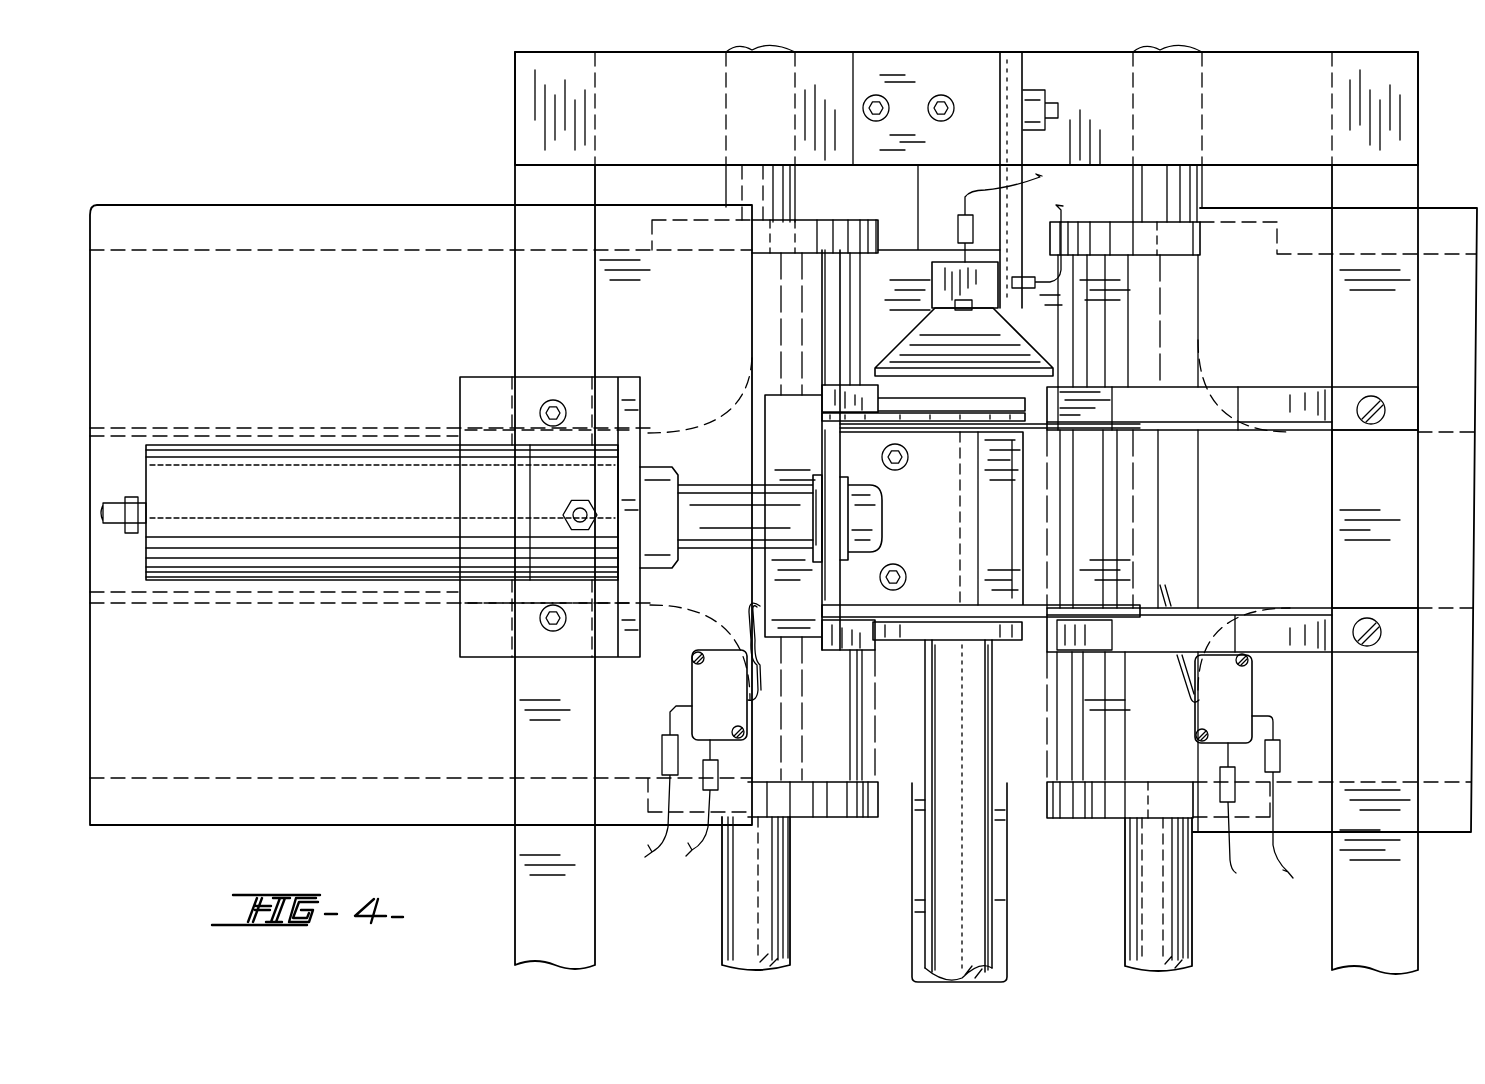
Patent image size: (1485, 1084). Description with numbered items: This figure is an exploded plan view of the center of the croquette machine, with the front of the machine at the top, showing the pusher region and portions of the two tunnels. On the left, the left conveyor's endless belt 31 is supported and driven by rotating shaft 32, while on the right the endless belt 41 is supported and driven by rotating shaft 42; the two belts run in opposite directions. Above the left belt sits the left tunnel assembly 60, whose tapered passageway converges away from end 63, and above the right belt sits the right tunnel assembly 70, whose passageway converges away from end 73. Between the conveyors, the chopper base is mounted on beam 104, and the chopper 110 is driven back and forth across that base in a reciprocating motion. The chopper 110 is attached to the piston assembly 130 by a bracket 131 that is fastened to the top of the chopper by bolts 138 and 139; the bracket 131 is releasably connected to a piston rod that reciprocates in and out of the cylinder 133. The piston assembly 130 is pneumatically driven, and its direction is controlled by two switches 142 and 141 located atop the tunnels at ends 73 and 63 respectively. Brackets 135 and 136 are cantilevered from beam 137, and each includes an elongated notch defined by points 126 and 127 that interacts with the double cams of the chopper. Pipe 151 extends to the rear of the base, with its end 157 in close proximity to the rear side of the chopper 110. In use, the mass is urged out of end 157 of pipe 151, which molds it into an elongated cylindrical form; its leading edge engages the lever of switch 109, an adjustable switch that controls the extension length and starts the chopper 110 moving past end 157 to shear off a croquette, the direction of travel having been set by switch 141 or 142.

The endless belt 31 is at (1418, 830).
The rotating shaft 32 is at (1195, 915).
The endless belt 41 is at (425, 825).
The rotating shaft 42 is at (783, 905).
The left tunnel assembly 60 is at (1452, 198).
The end of passageway 63 is at (1195, 505).
The right tunnel assembly 70 is at (475, 190).
The end of passageway 73 is at (752, 436).
The beam 104 is at (918, 206).
The switch 109 is at (932, 295).
The chopper 110 is at (1023, 528).
The notch point 126 is at (878, 400).
The notch point 127 is at (1055, 400).
The piston assembly 130 is at (444, 408).
The bracket 131 is at (822, 448).
The cylinder 133 is at (362, 458).
The bracket 135 is at (1278, 402).
The bracket 136 is at (1290, 640).
The beam 137 is at (1388, 498).
The bolt 138 is at (905, 468).
The bolt 139 is at (905, 573).
The switch 141 is at (1240, 702).
The switch 142 is at (692, 690).
The pipe 151 is at (935, 858).
The end of pipe 157 is at (993, 640).